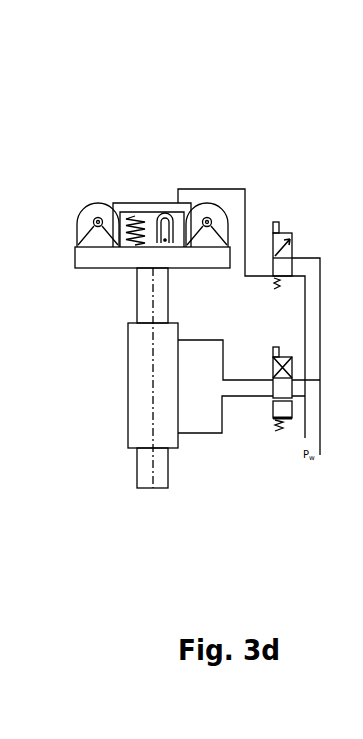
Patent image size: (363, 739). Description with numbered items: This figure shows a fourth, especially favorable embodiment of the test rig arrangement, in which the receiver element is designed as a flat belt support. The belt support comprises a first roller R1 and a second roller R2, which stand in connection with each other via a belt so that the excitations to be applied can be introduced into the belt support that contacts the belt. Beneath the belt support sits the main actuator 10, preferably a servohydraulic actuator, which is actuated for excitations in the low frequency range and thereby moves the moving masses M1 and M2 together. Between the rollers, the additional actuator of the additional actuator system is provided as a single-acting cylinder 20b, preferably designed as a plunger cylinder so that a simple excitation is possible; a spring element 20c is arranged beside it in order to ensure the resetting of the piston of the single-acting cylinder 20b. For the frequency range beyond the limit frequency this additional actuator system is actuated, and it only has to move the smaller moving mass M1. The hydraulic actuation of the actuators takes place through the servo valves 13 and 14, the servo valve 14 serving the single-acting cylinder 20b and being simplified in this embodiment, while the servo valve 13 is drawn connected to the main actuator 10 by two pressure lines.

The main actuator 10 is at (138, 420).
The servo valve 13 is at (283, 417).
The servo valve 14 is at (290, 236).
The single-acting cylinder 20b is at (175, 207).
The spring element 20c is at (140, 202).
The moving mass M1 is at (138, 202).
The moving mass M2 is at (133, 355).
The first roller R1 is at (208, 206).
The second roller R2 is at (90, 206).